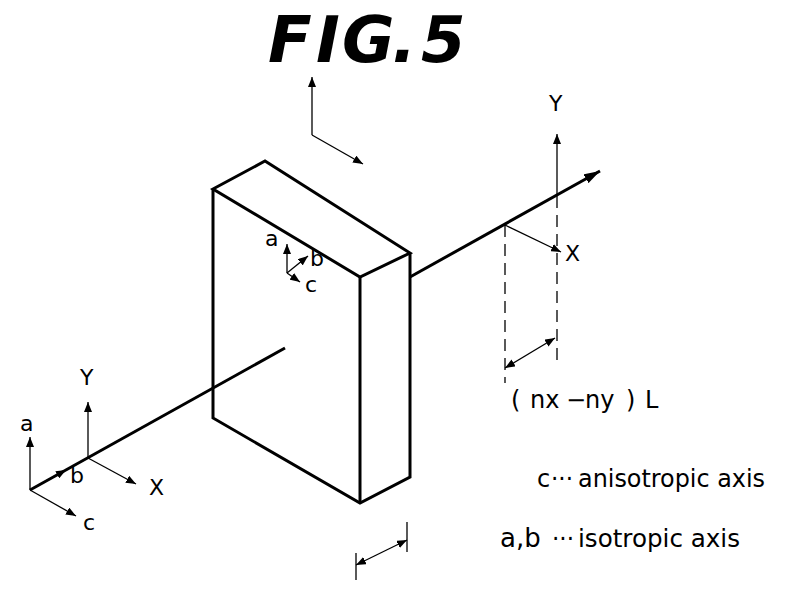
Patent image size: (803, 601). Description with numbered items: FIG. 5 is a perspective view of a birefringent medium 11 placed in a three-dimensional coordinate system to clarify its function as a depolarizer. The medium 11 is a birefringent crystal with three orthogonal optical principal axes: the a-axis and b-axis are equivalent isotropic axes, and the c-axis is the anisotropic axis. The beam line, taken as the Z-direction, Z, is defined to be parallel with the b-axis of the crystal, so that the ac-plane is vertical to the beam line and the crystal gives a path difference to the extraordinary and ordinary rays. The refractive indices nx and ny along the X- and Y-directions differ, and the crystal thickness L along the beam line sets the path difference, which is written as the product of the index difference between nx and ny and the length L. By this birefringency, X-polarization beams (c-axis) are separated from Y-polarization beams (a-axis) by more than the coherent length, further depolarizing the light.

The birefringent crystal plate 11 is at (297, 438).
The Z optical axis Z is at (315, 330).
The refractive index nx axis nx is at (358, 160).
The refractive index ny axis ny is at (293, 106).
The plate thickness L is at (381, 551).